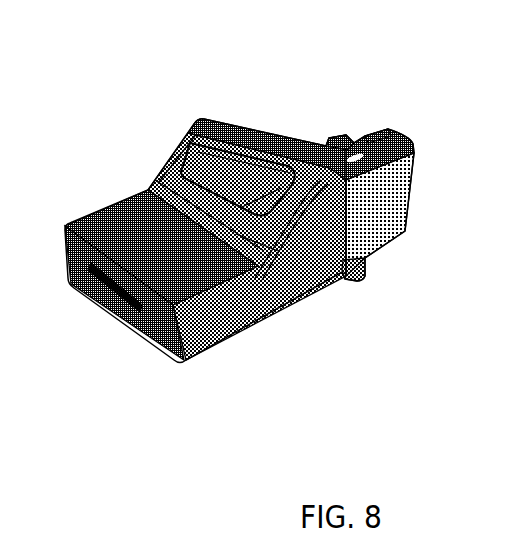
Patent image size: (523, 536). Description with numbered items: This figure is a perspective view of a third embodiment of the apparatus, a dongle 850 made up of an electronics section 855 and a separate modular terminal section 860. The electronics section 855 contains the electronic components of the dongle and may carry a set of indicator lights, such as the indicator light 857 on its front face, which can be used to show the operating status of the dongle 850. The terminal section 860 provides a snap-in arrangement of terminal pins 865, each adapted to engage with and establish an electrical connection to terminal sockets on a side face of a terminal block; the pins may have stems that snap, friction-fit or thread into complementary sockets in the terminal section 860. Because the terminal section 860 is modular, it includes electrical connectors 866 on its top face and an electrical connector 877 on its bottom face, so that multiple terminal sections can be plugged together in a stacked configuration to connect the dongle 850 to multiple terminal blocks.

The dongle 850 is at (256, 194).
The electronics section 855 is at (153, 163).
The indicator light 857 is at (133, 327).
The terminal section 860 is at (373, 182).
The terminal pins 865 is at (332, 128).
The electrical connectors 866 is at (368, 128).
The electrical connector 877 is at (345, 267).